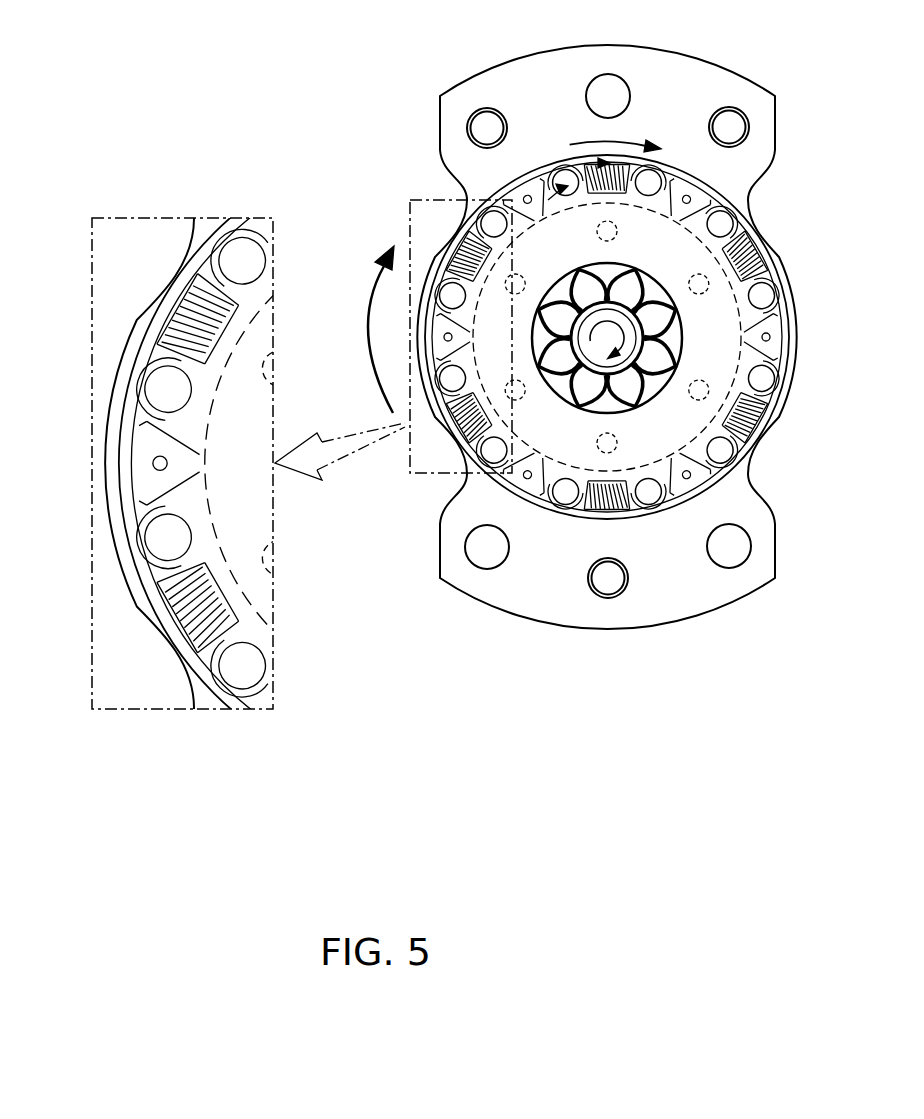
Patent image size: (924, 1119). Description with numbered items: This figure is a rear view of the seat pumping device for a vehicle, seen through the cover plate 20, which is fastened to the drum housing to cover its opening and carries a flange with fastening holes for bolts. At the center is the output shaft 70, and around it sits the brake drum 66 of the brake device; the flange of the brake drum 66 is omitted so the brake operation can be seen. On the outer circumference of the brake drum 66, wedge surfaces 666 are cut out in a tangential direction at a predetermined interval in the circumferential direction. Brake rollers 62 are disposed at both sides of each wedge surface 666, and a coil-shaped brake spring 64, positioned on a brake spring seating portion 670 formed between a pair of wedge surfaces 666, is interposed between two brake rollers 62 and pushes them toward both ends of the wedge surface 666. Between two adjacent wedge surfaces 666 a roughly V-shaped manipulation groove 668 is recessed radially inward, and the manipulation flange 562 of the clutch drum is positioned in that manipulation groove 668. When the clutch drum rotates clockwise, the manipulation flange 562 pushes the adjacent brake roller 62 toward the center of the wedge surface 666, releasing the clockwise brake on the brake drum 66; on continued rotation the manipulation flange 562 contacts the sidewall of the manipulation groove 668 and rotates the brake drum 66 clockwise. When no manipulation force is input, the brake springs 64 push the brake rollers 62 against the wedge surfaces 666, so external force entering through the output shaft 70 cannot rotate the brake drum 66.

The cover plate 20 is at (680, 593).
The brake roller 62 is at (561, 172).
The brake spring 64 is at (478, 232).
The brake drum 66 is at (478, 408).
The output shaft 70 is at (640, 335).
The manipulation flange 562 is at (532, 190).
The wedge surface 666 is at (515, 217).
The manipulation groove 668 is at (177, 482).
The brake spring seating portion 670 is at (207, 277).